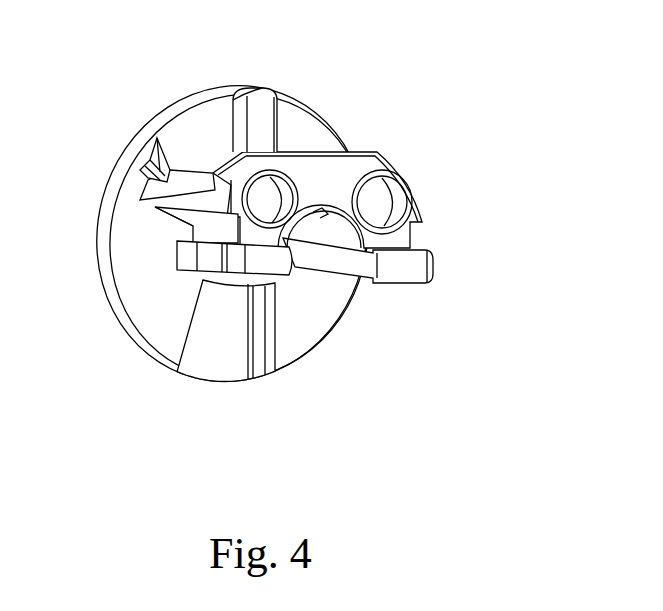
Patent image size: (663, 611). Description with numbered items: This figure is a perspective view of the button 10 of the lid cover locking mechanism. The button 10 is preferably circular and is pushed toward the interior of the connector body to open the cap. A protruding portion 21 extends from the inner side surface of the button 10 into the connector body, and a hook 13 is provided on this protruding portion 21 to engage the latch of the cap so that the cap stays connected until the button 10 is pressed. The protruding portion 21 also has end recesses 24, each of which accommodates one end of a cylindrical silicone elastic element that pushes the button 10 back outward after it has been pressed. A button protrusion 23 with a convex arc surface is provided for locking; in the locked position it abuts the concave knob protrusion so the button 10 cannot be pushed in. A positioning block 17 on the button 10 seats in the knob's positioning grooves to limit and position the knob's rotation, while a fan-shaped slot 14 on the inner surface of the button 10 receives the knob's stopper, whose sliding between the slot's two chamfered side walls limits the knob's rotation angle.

The button 10 is at (307, 323).
The hook 13 is at (358, 167).
The fan-shaped slot 14 is at (212, 358).
The positioning block 17 is at (262, 97).
The protruding portion 21 is at (172, 196).
The button protrusion 23 is at (148, 157).
The end recess 24 is at (263, 201).